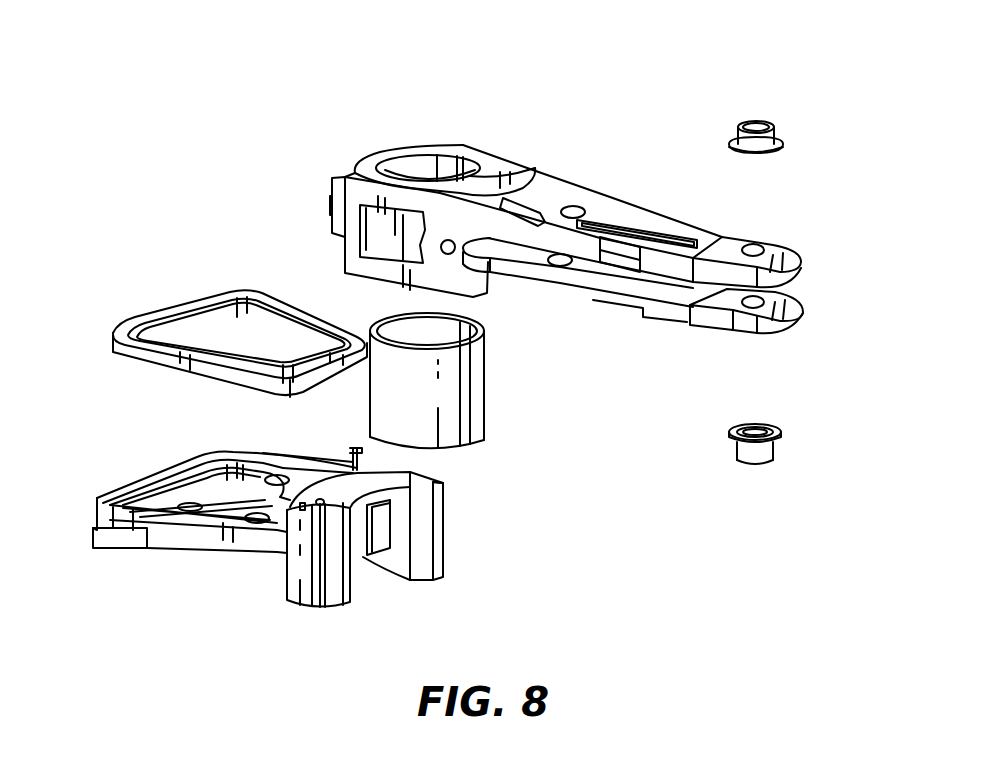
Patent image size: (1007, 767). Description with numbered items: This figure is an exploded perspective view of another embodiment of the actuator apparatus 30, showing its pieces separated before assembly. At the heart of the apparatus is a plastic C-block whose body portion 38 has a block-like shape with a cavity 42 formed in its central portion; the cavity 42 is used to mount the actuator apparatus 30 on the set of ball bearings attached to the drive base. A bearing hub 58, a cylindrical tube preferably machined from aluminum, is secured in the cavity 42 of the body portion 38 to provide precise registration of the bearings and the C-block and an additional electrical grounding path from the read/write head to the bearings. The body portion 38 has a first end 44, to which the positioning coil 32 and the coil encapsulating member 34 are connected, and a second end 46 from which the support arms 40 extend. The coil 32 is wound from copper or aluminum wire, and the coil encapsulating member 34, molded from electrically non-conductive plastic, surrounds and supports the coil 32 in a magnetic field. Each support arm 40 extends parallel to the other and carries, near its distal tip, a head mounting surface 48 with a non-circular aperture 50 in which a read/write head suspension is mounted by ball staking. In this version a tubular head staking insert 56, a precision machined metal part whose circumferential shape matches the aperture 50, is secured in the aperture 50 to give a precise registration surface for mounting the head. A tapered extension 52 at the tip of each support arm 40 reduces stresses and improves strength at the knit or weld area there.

The actuator apparatus 30 is at (644, 70).
The positioning coil 32 is at (118, 342).
The coil encapsulating member 34 is at (98, 500).
The body portion 38 is at (483, 155).
The support arm 40 is at (494, 232).
The cavity 42 is at (425, 163).
The first end 44 is at (362, 157).
The second end 46 is at (530, 168).
The head mounting surface 48 is at (740, 247).
The aperture 50 is at (770, 253).
The tapered extension 52 is at (803, 312).
The head staking insert 56 is at (772, 128).
The bearing hub 58 is at (483, 400).